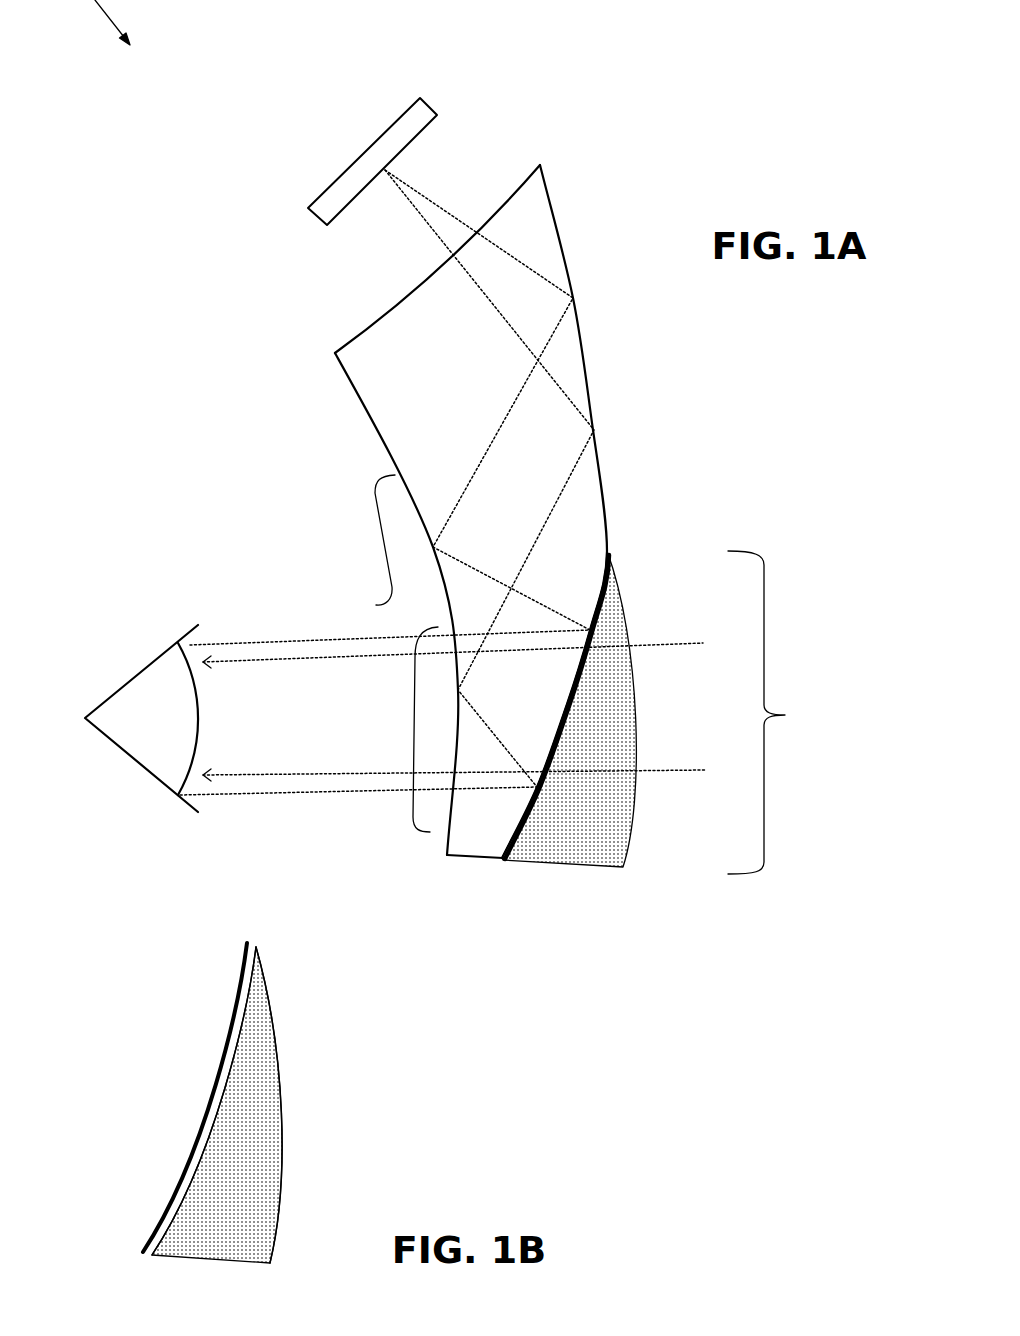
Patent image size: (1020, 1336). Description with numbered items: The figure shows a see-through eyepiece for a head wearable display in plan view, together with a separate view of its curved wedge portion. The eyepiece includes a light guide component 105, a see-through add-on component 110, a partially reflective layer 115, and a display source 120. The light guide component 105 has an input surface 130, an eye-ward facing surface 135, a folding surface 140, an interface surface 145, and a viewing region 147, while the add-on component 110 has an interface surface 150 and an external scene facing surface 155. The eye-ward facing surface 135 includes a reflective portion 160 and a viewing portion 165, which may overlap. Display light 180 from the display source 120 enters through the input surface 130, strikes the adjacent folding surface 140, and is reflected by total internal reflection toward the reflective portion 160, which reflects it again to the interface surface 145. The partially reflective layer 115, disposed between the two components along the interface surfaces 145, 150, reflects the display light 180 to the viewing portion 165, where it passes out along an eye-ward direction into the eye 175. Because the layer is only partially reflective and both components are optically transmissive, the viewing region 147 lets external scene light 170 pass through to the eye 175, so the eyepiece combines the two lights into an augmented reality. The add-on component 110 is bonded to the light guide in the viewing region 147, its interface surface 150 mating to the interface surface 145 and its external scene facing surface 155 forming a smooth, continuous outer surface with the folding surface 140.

In FIG. 1A, the light guide component 105 is at (441, 565).
In FIG. 1A, the see-through add-on component 110 is at (681, 658).
In FIG. 1B, the see-through add-on component 110 is at (255, 1105).
In FIG. 1A, the partially reflective layer 115 is at (604, 590).
In FIG. 1B, the partially reflective layer 115 is at (243, 967).
In FIG. 1A, the display source 120 is at (400, 112).
In FIG. 1A, the input surface 130 is at (377, 322).
In FIG. 1A, the eye-ward facing surface 135 is at (352, 390).
In FIG. 1A, the folding surface 140 is at (593, 377).
In FIG. 1A, the interface surface 145 is at (512, 830).
In FIG. 1A, the viewing region 147 is at (821, 712).
In FIG. 1B, the interface surface 150 is at (215, 1122).
In FIG. 1B, the external scene facing surface 155 is at (278, 1123).
In FIG. 1A, the reflective portion 160 is at (413, 657).
In FIG. 1A, the viewing portion 165 is at (413, 752).
In FIG. 1A, the external scene light 170 is at (665, 649).
In FIG. 1A, the eye 175 is at (134, 732).
In FIG. 1A, the display light 180 is at (433, 200).